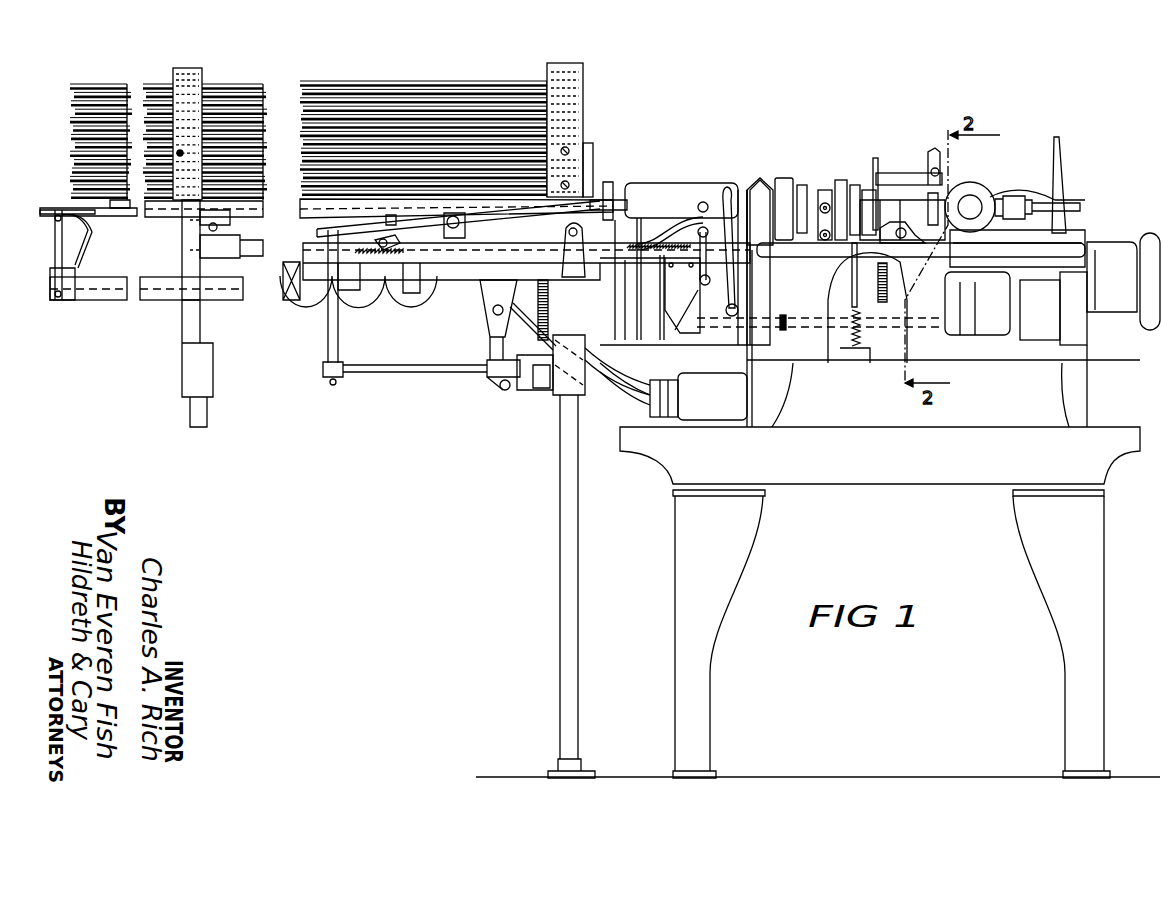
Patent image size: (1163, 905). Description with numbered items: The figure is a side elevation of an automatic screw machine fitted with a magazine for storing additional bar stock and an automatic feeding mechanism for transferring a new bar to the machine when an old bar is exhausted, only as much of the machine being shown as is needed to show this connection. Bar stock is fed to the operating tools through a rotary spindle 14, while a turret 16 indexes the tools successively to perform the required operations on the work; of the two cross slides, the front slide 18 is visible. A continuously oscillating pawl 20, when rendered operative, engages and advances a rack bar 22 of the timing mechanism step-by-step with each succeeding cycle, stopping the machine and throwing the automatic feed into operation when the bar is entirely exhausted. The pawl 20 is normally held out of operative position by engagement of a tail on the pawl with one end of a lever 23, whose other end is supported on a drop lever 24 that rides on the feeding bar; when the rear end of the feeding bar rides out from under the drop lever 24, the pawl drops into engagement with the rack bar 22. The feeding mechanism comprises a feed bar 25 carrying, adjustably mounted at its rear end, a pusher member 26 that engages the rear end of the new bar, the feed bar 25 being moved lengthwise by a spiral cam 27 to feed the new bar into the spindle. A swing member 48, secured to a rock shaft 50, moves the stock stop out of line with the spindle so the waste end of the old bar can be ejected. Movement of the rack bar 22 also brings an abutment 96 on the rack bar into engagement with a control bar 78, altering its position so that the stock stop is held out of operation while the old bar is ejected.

The rotary spindle 14 is at (805, 177).
The turret 16 is at (977, 187).
The front cross slide 18 is at (913, 227).
The oscillating pawl 20 is at (423, 235).
The rack bar 22 is at (657, 250).
The lever 23 is at (483, 217).
The drop lever 24 is at (603, 183).
The feed bar 25 is at (108, 287).
The pusher member 26 is at (58, 237).
The spiral cam 27 is at (300, 325).
The swing member 48 is at (932, 150).
The rock shaft 50 is at (915, 178).
The control bar 78 is at (805, 318).
The abutment 96 is at (708, 340).